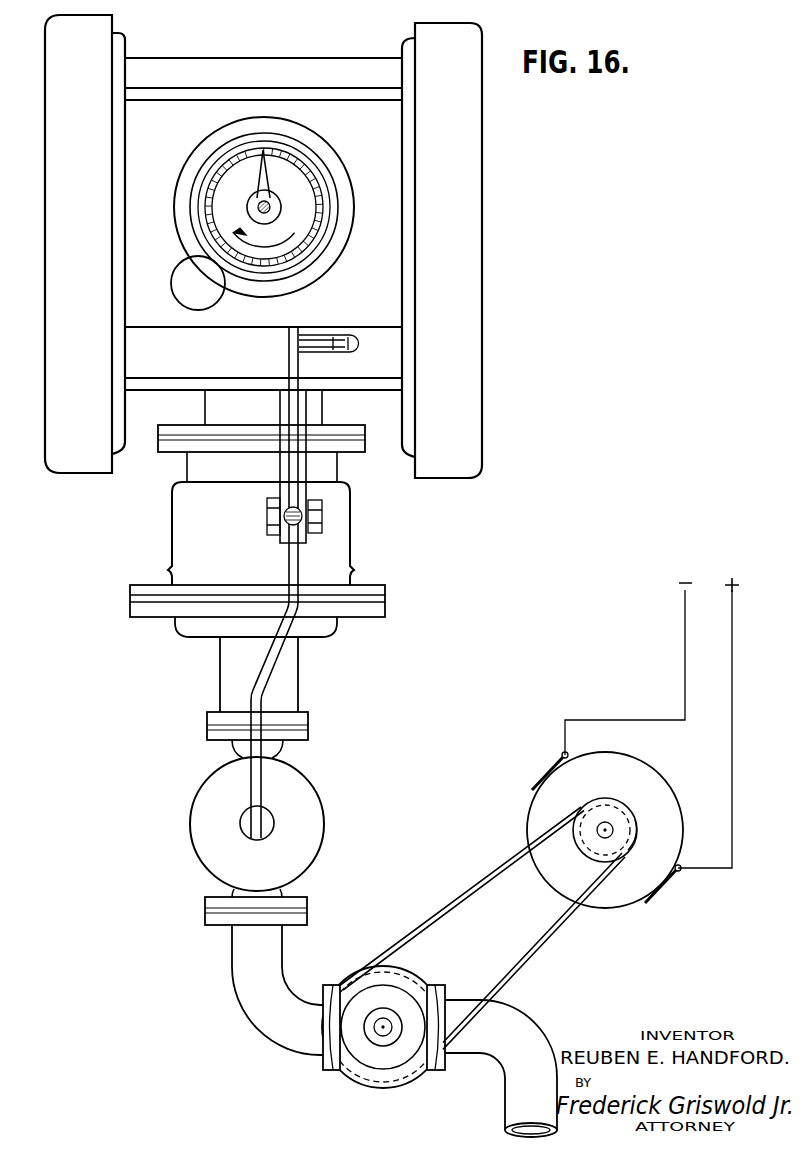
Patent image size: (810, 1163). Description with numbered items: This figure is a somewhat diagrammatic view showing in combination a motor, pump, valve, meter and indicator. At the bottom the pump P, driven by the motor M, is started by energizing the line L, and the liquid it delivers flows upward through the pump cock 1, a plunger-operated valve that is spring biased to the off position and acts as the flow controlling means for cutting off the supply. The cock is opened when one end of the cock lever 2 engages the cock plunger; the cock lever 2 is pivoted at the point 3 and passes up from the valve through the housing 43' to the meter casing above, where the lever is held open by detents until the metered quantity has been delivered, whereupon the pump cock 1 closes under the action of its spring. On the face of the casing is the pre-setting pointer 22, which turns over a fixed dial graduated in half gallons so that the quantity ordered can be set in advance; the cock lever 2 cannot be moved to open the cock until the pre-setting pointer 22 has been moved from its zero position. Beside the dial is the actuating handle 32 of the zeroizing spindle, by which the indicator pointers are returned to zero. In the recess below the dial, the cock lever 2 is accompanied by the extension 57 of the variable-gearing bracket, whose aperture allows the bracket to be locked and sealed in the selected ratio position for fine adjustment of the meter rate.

The pre-setting pointer 22 is at (260, 190).
The actuating handle 32 is at (171, 283).
The cock lever 2 is at (289, 350).
The extension 57 is at (312, 344).
The pivot point 3 is at (265, 516).
The valve bonnet housing 43' is at (235, 559).
The pump cock 1 is at (315, 826).
The pump P is at (403, 973).
The motor M is at (527, 808).
The line L is at (732, 651).